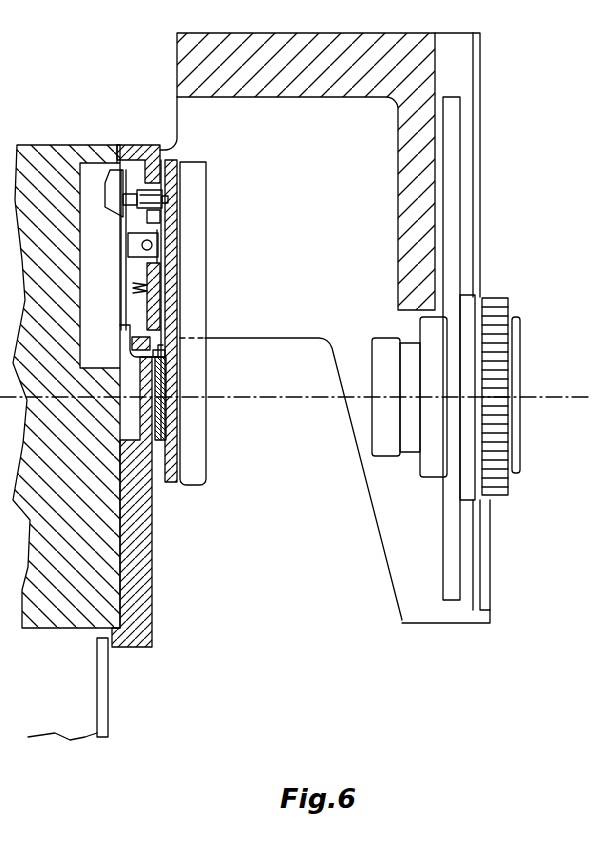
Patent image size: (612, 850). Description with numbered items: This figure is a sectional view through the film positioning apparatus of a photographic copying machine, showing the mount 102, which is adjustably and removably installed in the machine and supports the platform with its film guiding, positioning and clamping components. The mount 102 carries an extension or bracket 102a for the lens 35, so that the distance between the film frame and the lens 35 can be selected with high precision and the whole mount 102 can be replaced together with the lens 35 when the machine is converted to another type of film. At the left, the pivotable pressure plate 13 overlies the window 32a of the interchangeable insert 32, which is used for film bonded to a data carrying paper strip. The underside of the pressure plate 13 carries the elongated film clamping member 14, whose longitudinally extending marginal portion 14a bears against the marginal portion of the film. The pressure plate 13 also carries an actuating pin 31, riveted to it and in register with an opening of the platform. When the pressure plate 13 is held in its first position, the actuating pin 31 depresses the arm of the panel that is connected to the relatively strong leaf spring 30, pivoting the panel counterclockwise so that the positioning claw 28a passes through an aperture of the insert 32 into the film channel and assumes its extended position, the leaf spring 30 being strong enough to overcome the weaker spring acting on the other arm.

The pressure plate 13 is at (175, 162).
The film clamping member 14 is at (168, 413).
The marginal portion of the film clamping member 14a is at (160, 353).
The positioning claw 28a is at (163, 320).
The leaf spring 30 is at (110, 187).
The actuating pin 31 is at (137, 185).
The insert 32 is at (137, 628).
The window 32a is at (145, 330).
The lens 35 is at (500, 372).
The mount 102 is at (72, 608).
The bracket 102a is at (418, 260).